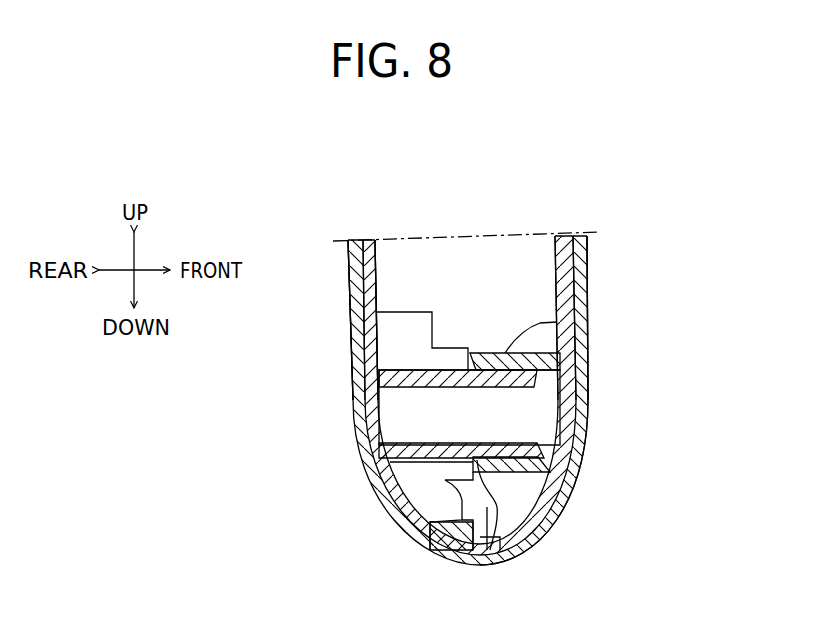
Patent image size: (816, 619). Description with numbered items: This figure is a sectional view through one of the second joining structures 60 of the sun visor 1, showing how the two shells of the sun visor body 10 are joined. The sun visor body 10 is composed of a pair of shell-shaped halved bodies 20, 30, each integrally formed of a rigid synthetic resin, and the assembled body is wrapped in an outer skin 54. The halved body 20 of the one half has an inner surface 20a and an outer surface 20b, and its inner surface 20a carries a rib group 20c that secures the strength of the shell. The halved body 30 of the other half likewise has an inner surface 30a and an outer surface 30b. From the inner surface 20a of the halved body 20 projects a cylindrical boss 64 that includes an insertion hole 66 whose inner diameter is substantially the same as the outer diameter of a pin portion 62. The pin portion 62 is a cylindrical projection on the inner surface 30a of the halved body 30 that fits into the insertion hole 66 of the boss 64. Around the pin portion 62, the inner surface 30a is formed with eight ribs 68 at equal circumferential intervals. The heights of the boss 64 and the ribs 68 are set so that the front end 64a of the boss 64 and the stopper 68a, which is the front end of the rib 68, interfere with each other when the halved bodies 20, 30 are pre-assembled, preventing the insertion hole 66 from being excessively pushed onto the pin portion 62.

The sun visor 1 is at (655, 189).
The sun visor body 10 is at (404, 520).
The halved body of one half 20 is at (568, 316).
The inner surface 20a is at (562, 303).
The outer surface 20b is at (577, 250).
The rib group 20c is at (542, 338).
The halved body of the other half 30 is at (321, 319).
The inner surface 30a is at (348, 263).
The outer surface 30b is at (366, 297).
The outer skin 54 is at (372, 476).
The second joining structure 60 is at (597, 391).
The pin portion 62 is at (428, 383).
The boss 64 is at (572, 492).
The front end of the boss 64a is at (500, 467).
The insertion hole 66 is at (520, 445).
The rib 68 is at (397, 348).
The stopper 68a is at (500, 467).